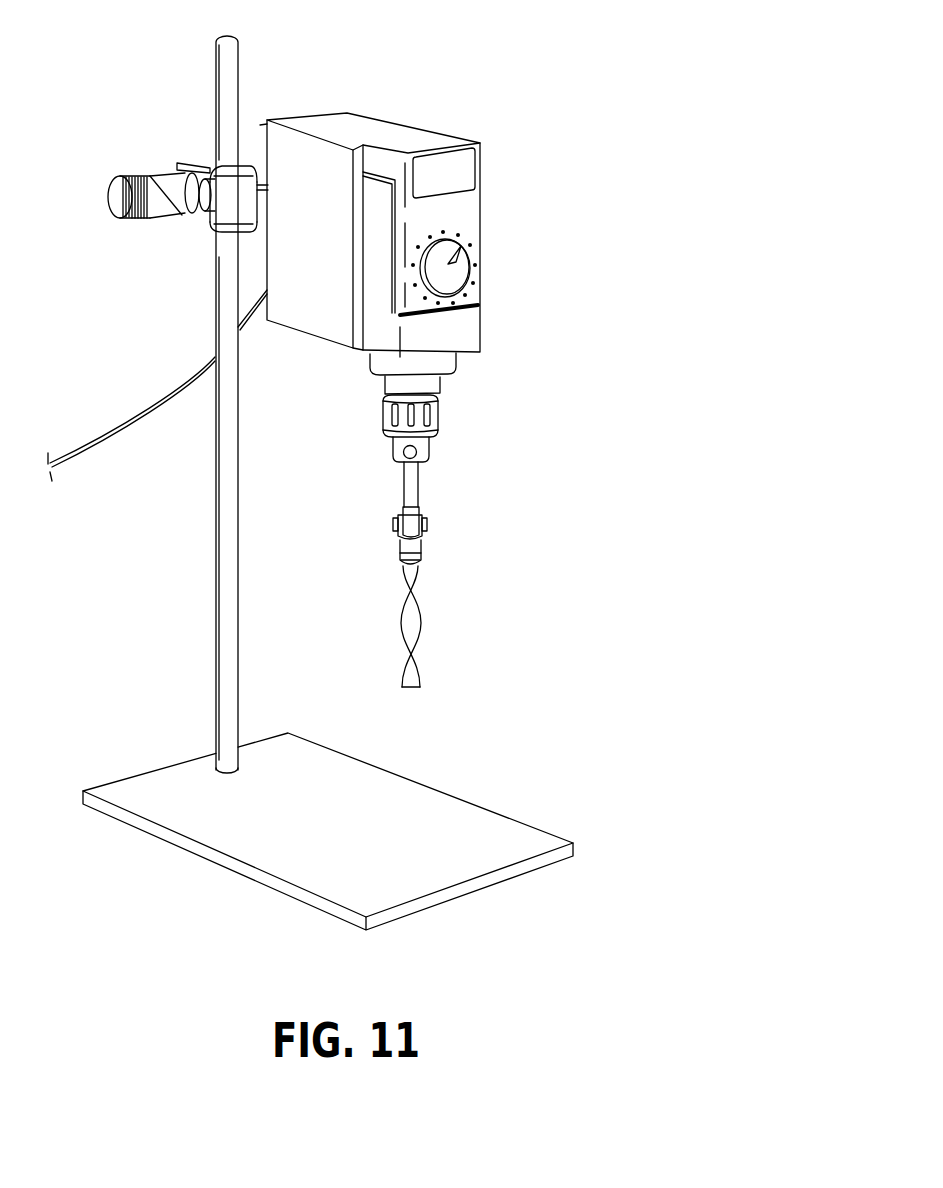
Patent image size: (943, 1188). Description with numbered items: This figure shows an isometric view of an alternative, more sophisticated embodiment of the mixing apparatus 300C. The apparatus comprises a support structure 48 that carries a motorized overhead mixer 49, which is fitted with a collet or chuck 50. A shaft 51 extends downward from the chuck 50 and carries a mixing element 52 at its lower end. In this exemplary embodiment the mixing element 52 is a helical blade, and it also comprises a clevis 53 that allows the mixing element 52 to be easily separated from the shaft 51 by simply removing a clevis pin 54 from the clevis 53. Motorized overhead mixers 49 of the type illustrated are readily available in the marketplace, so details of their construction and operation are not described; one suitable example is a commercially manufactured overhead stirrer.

The support structure 48 is at (217, 818).
The motorized overhead mixer 49 is at (313, 182).
The collet or chuck 50 is at (383, 420).
The shaft 51 is at (420, 485).
The mixing element 52 is at (420, 627).
The clevis 53 is at (398, 555).
The clevis pin 54 is at (428, 524).
The mixing apparatus 300C is at (625, 0).